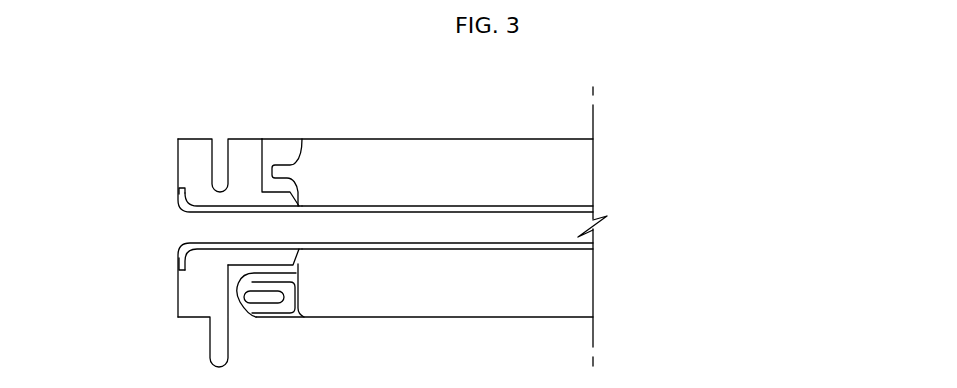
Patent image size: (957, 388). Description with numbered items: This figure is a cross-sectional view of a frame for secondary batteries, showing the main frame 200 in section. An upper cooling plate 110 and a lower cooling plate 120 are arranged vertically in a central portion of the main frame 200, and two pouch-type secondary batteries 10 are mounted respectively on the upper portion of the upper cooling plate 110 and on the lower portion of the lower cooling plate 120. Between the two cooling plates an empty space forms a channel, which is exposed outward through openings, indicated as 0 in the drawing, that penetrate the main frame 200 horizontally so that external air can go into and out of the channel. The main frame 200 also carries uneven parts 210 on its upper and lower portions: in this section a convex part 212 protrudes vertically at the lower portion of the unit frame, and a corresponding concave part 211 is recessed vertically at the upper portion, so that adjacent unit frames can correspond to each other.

The pouch-type secondary battery 10 is at (420, 139).
The main frame 200 is at (176, 220).
The uneven part 210 is at (176, 253).
The concave part 211 is at (220, 175).
The convex part 212 is at (218, 352).
The flexible sheet 0 is at (363, 228).
The upper cooling plate 110 is at (178, 188).
The lower cooling plate 120 is at (159, 261).